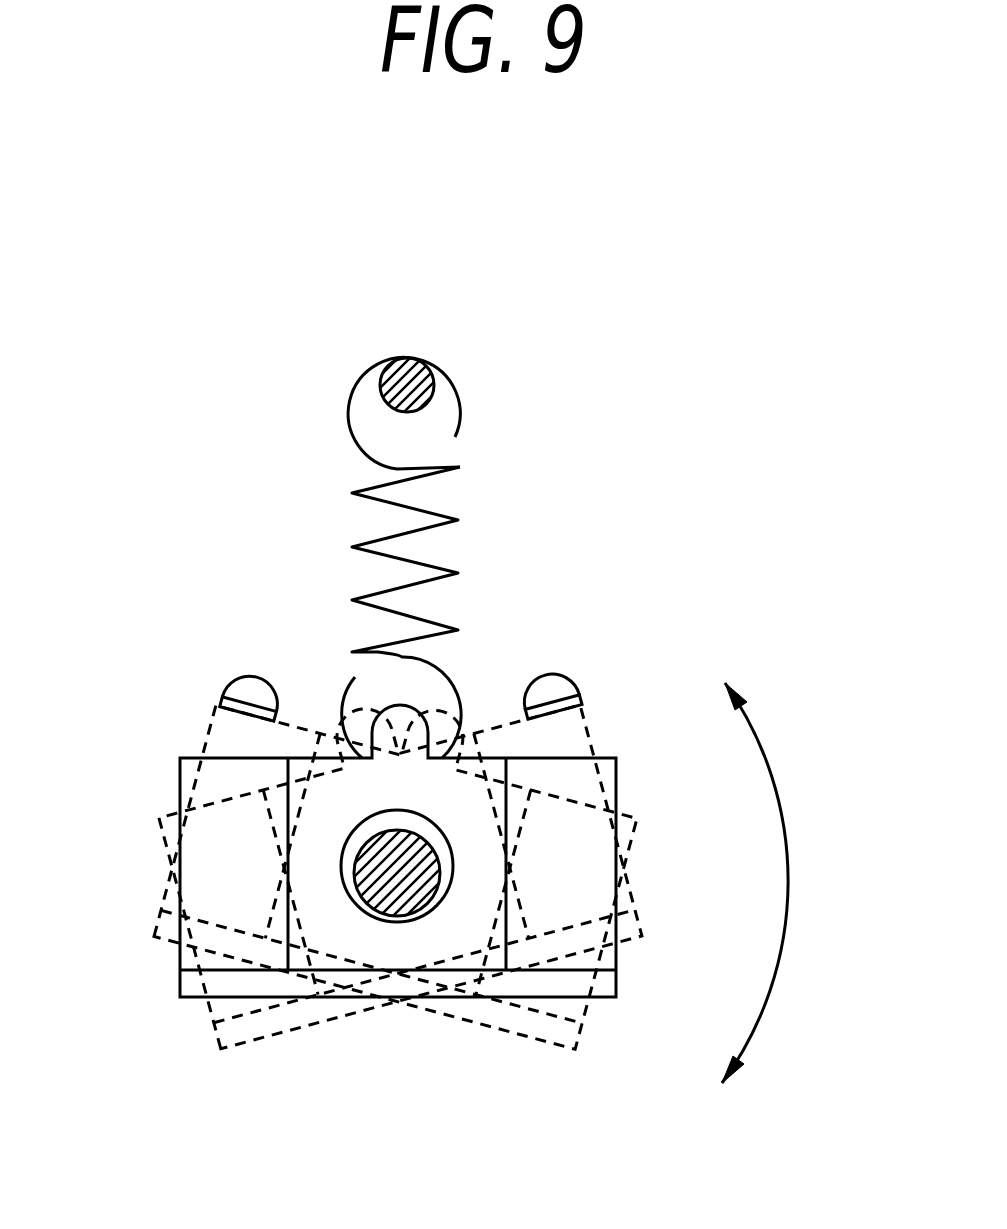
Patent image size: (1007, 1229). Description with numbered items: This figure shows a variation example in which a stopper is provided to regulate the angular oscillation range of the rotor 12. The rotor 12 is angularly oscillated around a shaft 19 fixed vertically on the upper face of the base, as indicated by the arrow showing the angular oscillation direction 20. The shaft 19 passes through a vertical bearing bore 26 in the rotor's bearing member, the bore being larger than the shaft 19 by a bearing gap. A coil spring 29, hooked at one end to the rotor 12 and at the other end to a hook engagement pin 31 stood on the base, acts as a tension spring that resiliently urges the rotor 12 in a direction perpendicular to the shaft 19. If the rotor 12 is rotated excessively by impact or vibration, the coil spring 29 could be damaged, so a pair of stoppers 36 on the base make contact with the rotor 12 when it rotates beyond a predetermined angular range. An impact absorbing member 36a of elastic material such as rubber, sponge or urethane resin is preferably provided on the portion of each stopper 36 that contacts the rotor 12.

The rotor 12 is at (145, 753).
The shaft 19 is at (387, 898).
The angular oscillation direction 20 is at (788, 877).
The bearing bore 26 is at (453, 853).
The coil spring 29 is at (458, 521).
The hook engagement pin 31 is at (420, 358).
The stopper 36 is at (257, 670).
The impact absorbing member 36a is at (223, 693).